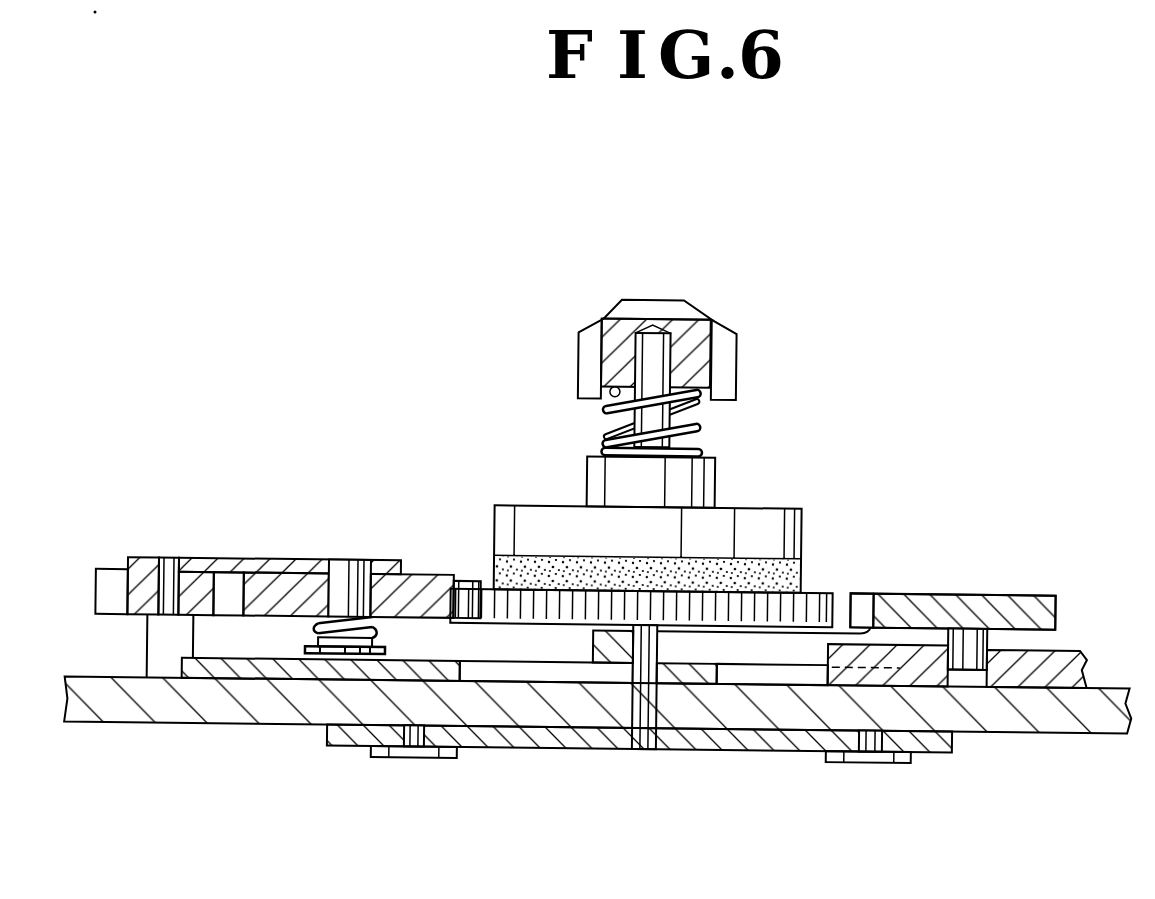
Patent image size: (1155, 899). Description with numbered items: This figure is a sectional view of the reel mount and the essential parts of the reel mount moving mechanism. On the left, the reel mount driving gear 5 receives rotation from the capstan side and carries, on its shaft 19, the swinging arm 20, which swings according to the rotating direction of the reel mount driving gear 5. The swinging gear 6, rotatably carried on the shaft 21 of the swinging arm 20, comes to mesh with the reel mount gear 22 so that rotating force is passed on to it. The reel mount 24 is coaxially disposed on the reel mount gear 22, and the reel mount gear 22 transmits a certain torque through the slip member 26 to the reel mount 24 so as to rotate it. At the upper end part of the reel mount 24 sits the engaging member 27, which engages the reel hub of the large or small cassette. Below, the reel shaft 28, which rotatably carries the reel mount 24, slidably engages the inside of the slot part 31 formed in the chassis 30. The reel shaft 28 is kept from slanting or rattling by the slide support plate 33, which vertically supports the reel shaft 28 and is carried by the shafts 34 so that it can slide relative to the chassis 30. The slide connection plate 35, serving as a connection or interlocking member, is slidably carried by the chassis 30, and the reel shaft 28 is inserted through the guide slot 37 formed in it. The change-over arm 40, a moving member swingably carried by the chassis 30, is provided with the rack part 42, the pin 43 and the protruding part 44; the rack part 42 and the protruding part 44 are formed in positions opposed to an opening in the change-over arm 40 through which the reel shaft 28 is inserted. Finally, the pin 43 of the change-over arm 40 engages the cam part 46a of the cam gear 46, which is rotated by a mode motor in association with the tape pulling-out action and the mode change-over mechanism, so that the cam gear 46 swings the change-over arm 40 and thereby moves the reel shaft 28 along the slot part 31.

The reel mount driving gear 5 is at (145, 565).
The swinging gear 6 is at (417, 577).
The shaft of the reel mount driving gear 19 is at (168, 565).
The swinging arm 20 is at (257, 565).
The shaft of the swinging arm 21 is at (340, 565).
The reel mount gear 22 is at (808, 592).
The reel mount 24 is at (747, 533).
The slip member 26 is at (550, 557).
The engaging member 27 is at (683, 340).
The reel shaft 28 is at (641, 737).
The chassis 30 is at (1038, 722).
The slot part 31 is at (665, 707).
The slide support plate 33 is at (492, 737).
The shafts 34 is at (413, 762).
The slide connection plate 35 is at (257, 672).
The guide slot 37 is at (558, 682).
The change-over arm 40 is at (932, 600).
The rack part 42 is at (860, 600).
The pin 43 is at (968, 640).
The protruding part 44 is at (688, 648).
The cam gear 46 is at (1067, 660).
The cam part 46a is at (965, 670).